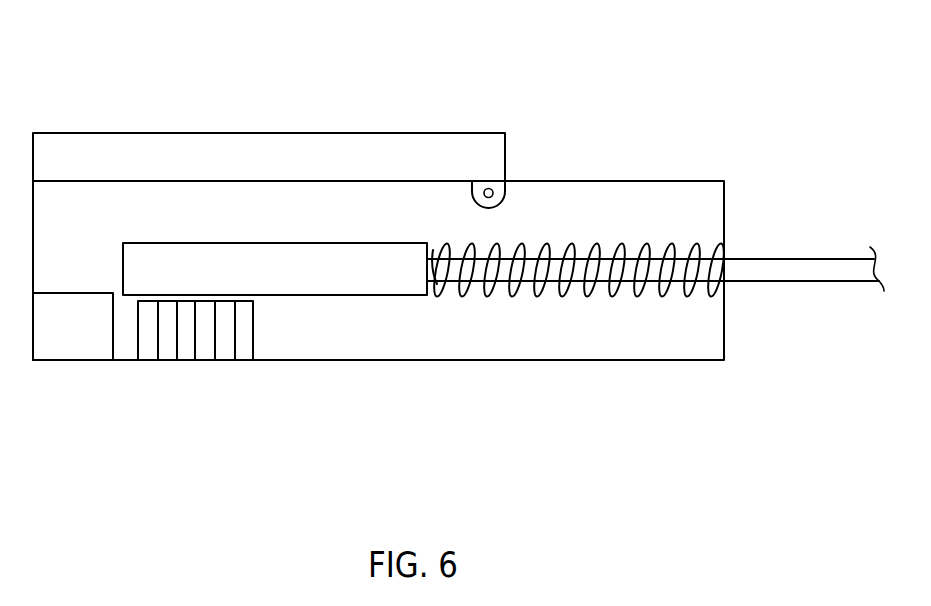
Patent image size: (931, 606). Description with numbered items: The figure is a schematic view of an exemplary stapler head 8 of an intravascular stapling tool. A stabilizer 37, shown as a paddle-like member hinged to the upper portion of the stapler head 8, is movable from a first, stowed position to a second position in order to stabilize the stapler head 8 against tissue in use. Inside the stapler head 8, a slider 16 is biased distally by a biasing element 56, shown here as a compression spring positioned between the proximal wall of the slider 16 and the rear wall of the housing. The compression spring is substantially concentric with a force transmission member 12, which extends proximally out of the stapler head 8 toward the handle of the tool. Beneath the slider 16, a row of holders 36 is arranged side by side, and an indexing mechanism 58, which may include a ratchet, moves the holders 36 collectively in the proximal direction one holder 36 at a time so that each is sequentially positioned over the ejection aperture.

The stapler head 8 is at (587, 170).
The stabilizer 37 is at (162, 133).
The slider 16 is at (289, 283).
The force transmission member 12 is at (788, 259).
The biasing element 56 is at (646, 247).
The indexing mechanism 58 is at (52, 333).
The holders 36 is at (147, 360).